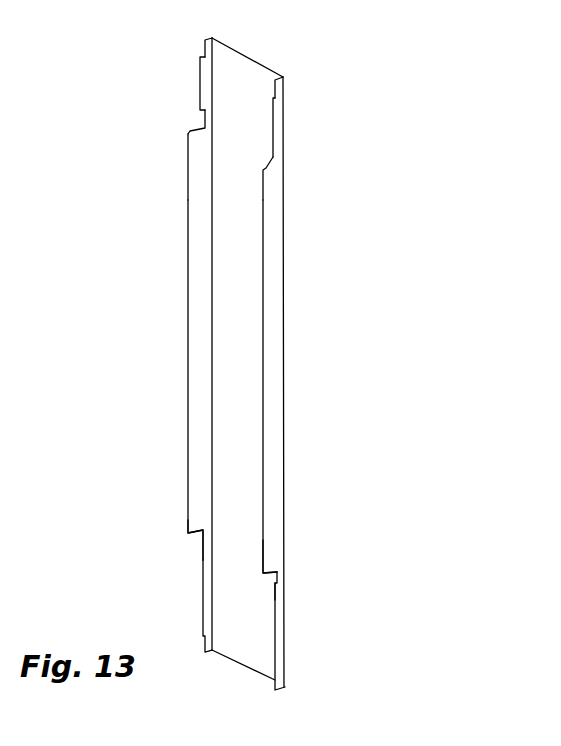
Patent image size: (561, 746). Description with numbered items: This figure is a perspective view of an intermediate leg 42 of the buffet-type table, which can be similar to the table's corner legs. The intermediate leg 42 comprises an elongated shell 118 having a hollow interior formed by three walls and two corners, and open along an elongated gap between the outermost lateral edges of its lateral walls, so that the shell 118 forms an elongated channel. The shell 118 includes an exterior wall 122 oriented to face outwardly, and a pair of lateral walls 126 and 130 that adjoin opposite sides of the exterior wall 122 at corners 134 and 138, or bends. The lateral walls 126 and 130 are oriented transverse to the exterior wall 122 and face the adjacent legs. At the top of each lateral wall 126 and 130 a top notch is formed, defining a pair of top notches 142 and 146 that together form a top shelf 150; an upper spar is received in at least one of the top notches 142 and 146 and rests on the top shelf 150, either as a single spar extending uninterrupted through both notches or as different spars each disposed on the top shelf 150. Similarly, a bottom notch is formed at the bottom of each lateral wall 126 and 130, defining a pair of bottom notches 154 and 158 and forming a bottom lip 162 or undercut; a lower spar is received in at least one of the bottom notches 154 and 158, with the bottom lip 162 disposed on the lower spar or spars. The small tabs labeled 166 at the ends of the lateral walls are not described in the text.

The intermediate leg 42 is at (285, 342).
The elongated shell 118 is at (267, 298).
The exterior wall 122 is at (250, 55).
The lateral wall 126 is at (195, 365).
The lateral wall 130 is at (278, 455).
The corner 134 is at (215, 37).
The corner 138 is at (283, 77).
The top notch 142 is at (198, 122).
The top notch 146 is at (273, 162).
The top shelf 150 is at (197, 130).
The bottom notch 154 is at (202, 538).
The bottom notch 158 is at (278, 578).
The bottom lip 162 is at (265, 575).
The tab 166 is at (198, 78).